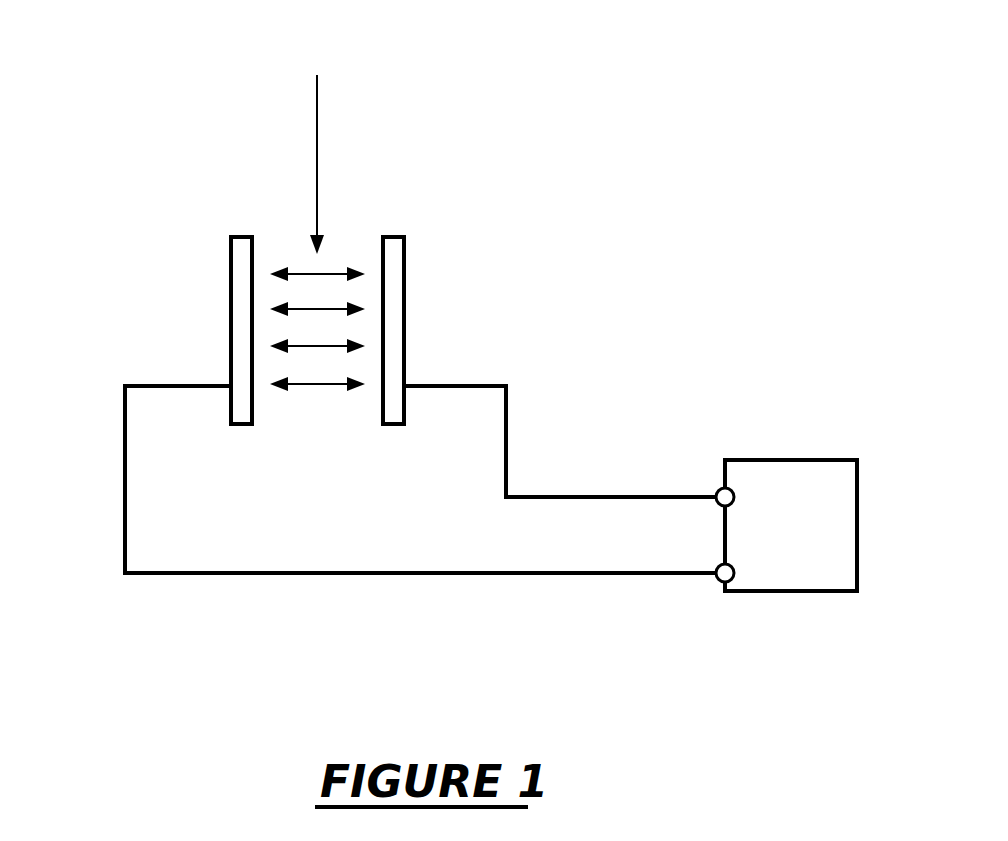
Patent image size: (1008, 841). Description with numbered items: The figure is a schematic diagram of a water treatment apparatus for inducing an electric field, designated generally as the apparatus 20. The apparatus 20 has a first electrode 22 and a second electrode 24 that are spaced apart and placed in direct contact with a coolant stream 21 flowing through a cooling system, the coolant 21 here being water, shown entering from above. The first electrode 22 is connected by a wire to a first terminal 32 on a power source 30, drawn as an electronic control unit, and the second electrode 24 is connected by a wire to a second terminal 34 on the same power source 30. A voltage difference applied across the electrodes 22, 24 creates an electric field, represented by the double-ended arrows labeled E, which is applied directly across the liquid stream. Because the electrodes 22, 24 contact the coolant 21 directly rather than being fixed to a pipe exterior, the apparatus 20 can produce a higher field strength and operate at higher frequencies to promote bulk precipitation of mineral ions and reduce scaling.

The apparatus for inducing an electric field 20 is at (466, 110).
The coolant stream 21 is at (316, 180).
The first electrode 22 is at (240, 345).
The second electrode 24 is at (396, 366).
The electric field E is at (318, 312).
The power source 30 is at (793, 500).
The first terminal 32 is at (718, 582).
The second terminal 34 is at (721, 488).